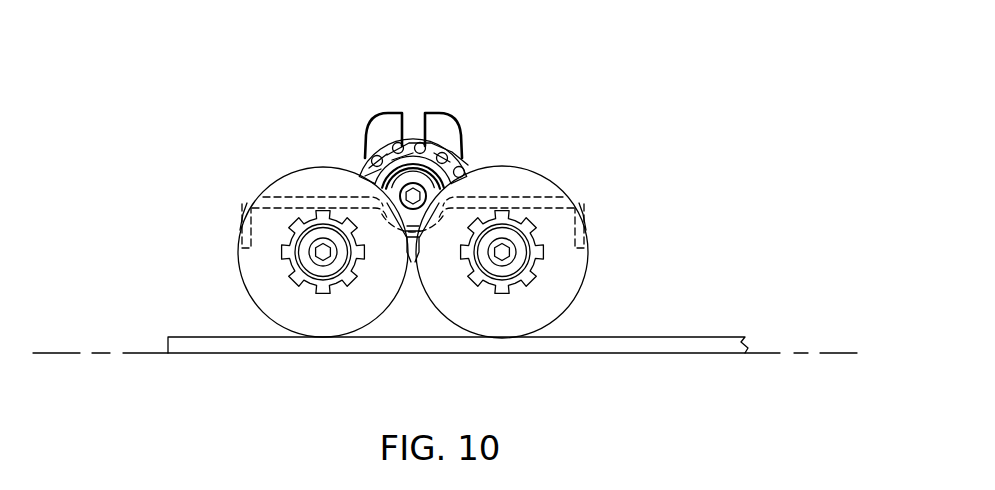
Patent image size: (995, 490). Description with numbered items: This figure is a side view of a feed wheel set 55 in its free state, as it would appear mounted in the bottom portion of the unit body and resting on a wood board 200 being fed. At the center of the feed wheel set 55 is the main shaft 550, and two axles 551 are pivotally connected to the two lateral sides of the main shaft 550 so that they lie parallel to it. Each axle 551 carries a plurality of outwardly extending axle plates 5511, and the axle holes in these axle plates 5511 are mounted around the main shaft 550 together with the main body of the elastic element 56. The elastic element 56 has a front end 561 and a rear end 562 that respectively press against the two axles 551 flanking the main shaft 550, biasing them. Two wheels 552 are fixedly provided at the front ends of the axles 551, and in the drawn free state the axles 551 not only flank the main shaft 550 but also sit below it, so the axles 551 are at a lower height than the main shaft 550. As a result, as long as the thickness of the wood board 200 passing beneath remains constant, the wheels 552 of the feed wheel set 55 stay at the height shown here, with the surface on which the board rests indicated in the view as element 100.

The feed wheel set 55 is at (406, 172).
The elastic element 56 is at (413, 147).
The axle plates 5511 is at (371, 118).
The main shaft 550 is at (364, 162).
The wheels 552 is at (290, 176).
The axles 551 is at (281, 276).
The front end 561 is at (243, 205).
The rear end 562 is at (585, 205).
The wood board 200 is at (697, 346).
The support surface 100 is at (797, 352).